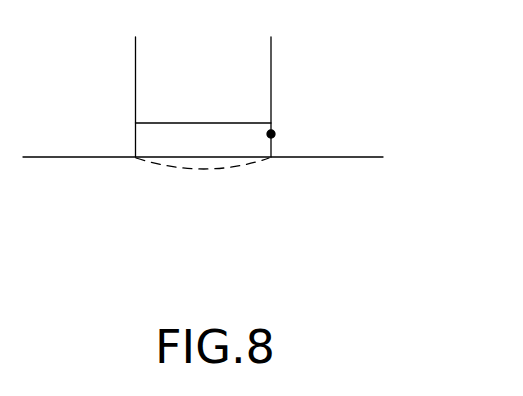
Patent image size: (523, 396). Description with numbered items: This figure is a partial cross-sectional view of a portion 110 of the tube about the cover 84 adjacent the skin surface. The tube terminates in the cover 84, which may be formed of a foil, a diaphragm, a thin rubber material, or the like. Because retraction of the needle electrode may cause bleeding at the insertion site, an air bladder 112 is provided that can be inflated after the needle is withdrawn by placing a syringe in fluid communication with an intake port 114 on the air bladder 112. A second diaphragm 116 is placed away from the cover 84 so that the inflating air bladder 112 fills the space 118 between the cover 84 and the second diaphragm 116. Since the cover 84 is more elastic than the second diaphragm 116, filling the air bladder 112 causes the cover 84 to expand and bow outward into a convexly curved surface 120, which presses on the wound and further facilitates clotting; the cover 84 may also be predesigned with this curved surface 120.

The cover 84 is at (166, 200).
The portion of tube 110 is at (380, 218).
The air bladder 112 is at (143, 138).
The intake port 114 is at (275, 134).
The second diaphragm 116 is at (250, 122).
The space 118 is at (205, 135).
The convexly curved surface 120 is at (252, 196).